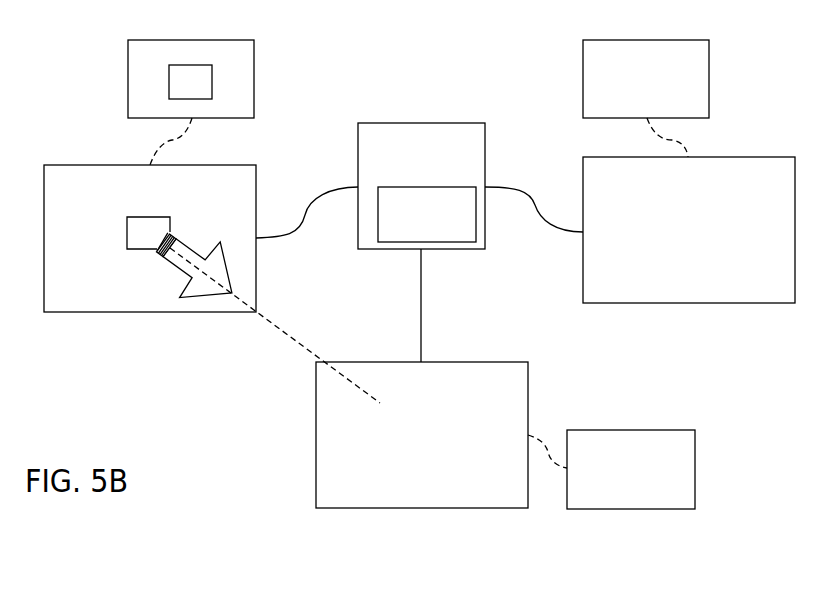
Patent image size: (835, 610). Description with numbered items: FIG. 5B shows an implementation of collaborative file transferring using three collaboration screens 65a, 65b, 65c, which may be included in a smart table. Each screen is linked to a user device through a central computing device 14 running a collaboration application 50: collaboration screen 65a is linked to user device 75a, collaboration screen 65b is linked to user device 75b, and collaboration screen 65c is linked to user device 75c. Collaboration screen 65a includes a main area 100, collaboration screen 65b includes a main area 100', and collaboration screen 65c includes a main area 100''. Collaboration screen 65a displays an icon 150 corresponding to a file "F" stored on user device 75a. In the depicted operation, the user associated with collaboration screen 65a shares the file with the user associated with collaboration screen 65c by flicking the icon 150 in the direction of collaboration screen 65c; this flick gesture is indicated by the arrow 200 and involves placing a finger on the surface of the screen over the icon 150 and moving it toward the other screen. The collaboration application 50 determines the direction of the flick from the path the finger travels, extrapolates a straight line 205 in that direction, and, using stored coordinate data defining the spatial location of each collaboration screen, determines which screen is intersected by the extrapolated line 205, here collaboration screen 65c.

The computing device 14 is at (467, 173).
The collaboration application 50 is at (462, 236).
The collaboration screen 65a is at (110, 158).
The collaboration screen 65b is at (723, 150).
The collaboration screen 65c is at (466, 355).
The user device 75a is at (152, 40).
The user device 75b is at (695, 40).
The user device 75c is at (677, 430).
The main area 100 is at (150, 263).
The main area 100' is at (689, 260).
The main area 100'' is at (386, 435).
The icon 150 is at (135, 246).
The arrow 200 is at (187, 293).
The straight line 205 is at (293, 338).